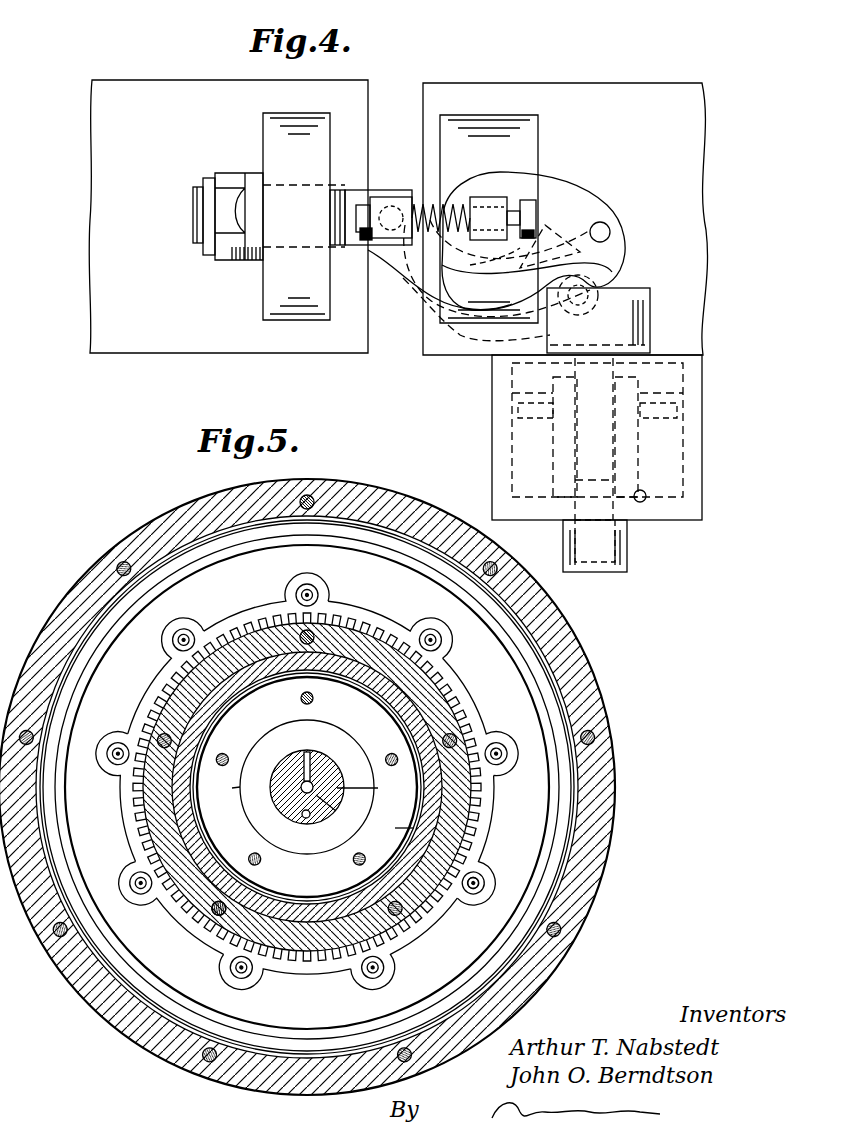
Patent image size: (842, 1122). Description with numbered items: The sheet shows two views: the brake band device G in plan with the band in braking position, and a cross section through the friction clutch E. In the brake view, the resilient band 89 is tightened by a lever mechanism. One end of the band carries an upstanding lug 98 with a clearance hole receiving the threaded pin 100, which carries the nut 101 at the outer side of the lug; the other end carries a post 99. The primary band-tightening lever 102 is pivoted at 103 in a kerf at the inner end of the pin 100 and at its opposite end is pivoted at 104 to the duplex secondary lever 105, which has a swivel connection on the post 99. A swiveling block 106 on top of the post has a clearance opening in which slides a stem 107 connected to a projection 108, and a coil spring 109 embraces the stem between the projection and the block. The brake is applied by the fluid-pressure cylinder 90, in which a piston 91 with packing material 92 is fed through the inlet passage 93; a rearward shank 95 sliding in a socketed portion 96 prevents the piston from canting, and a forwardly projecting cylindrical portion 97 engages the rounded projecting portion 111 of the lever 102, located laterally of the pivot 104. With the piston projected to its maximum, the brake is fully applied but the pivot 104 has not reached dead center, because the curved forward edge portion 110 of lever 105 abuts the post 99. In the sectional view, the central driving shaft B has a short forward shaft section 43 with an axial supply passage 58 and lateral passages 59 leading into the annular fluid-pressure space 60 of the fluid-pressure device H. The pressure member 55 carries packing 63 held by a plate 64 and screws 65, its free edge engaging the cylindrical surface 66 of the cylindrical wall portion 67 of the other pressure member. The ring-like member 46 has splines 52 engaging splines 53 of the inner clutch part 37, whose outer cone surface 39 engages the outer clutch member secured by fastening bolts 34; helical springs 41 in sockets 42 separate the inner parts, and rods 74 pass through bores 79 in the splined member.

In FIG. 4, the brake band device G is at (228, 199).
In FIG. 4, the upstanding lug 98 is at (273, 148).
In FIG. 4, the nut 101 is at (232, 172).
In FIG. 4, the threaded pin 100 is at (350, 200).
In FIG. 4, the projection 108 is at (392, 200).
In FIG. 4, the pivot 103 is at (370, 248).
In FIG. 4, the coil spring 109 is at (440, 205).
In FIG. 4, the post 99 is at (492, 208).
In FIG. 4, the stem 107 is at (516, 215).
In FIG. 4, the swiveling block 106 is at (500, 210).
In FIG. 4, the resilient band 89 is at (644, 95).
In FIG. 4, the duplex secondary lever 105 is at (556, 202).
In FIG. 4, the pivot pin 104 is at (602, 232).
In FIG. 4, the primary band-tightening lever 102 is at (462, 297).
In FIG. 4, the curved forward edge portion 110 is at (512, 277).
In FIG. 4, the rounded projecting portion 111 is at (600, 278).
In FIG. 4, the cylindrical portion 97 is at (640, 318).
In FIG. 4, the fluid-pressure cylinder 90 is at (692, 442).
In FIG. 4, the piston 91 is at (675, 383).
In FIG. 4, the packing material 92 is at (680, 410).
In FIG. 4, the shank 95 is at (605, 438).
In FIG. 4, the inlet passage 93 is at (645, 502).
In FIG. 4, the socketed portion 96 is at (625, 540).
In FIG. 5, the fastening bolts 34 is at (330, 787).
In FIG. 5, the outer cone surface 39 is at (349, 787).
In FIG. 5, the inner clutch part 37 is at (361, 787).
In FIG. 5, the friction clutch E is at (344, 787).
In FIG. 5, the splines 52 is at (311, 790).
In FIG. 5, the sockets 42 is at (473, 901).
In FIG. 5, the helical springs 41 is at (497, 861).
In FIG. 5, the splines 53 is at (302, 786).
In FIG. 5, the rods 74 is at (307, 787).
In FIG. 5, the ring-like member 46 is at (328, 787).
In FIG. 5, the annular fluid-pressure space 60 is at (261, 787).
In FIG. 5, the bores 79 is at (173, 914).
In FIG. 5, the packing 63 is at (307, 787).
In FIG. 5, the cylindrical surface 66 is at (307, 787).
In FIG. 5, the cylindrical wall portion 67 is at (307, 787).
In FIG. 5, the screws 65 is at (307, 779).
In FIG. 5, the pressure member 55 is at (307, 782).
In FIG. 5, the plate 64 is at (251, 775).
In FIG. 5, the axial supply passage 58 is at (306, 762).
In FIG. 5, the lateral passages 59 is at (326, 739).
In FIG. 5, the forward shaft section 43 is at (316, 845).
In FIG. 5, the central driving shaft B is at (366, 796).
In FIG. 5, the fluid-pressure device H is at (395, 831).